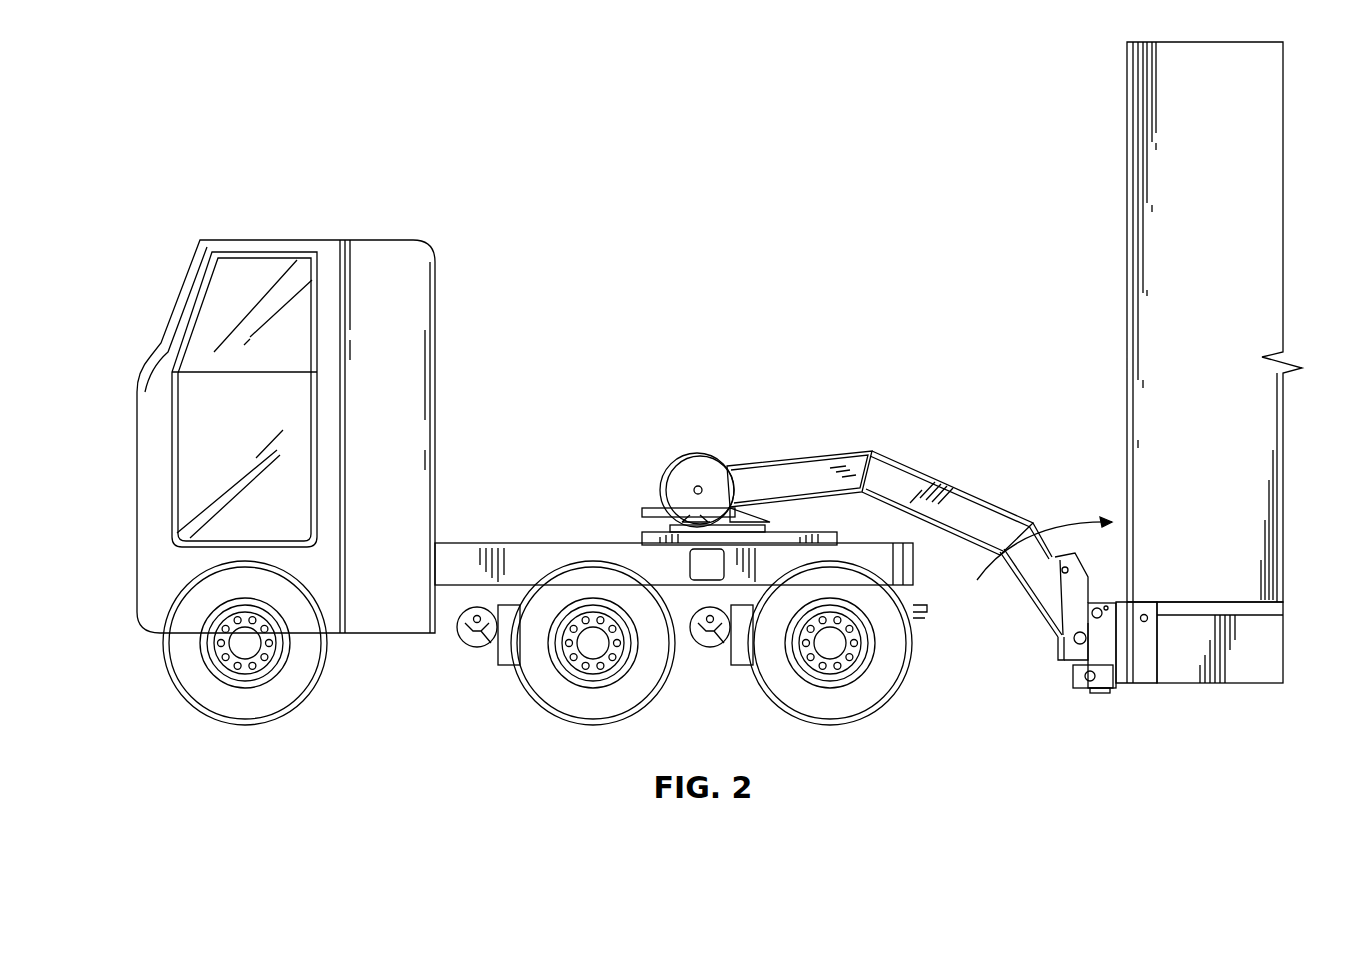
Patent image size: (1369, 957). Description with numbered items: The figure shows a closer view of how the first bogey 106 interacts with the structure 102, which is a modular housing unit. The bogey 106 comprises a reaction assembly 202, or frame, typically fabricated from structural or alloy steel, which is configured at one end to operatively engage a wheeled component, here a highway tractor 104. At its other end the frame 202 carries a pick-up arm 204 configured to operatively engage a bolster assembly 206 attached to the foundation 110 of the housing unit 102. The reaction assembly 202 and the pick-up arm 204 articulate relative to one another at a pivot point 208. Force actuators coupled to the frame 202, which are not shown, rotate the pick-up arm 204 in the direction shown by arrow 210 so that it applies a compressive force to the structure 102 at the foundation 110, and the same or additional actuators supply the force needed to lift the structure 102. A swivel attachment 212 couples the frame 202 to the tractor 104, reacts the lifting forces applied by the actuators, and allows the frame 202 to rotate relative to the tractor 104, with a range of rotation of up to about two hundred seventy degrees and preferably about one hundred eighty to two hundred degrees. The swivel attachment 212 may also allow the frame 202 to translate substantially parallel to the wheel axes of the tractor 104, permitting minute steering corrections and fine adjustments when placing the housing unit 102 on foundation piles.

The structure 102 is at (1150, 328).
The highway tractor 104 is at (286, 436).
The first bogey 106 is at (872, 538).
The foundation 110 is at (1270, 662).
The reaction assembly 202 is at (930, 487).
The pick-up arm 204 is at (1070, 598).
The bolster assembly 206 is at (1127, 677).
The pivot point 208 is at (1058, 645).
The arrow 210 is at (1075, 510).
The swivel attachment 212 is at (630, 510).